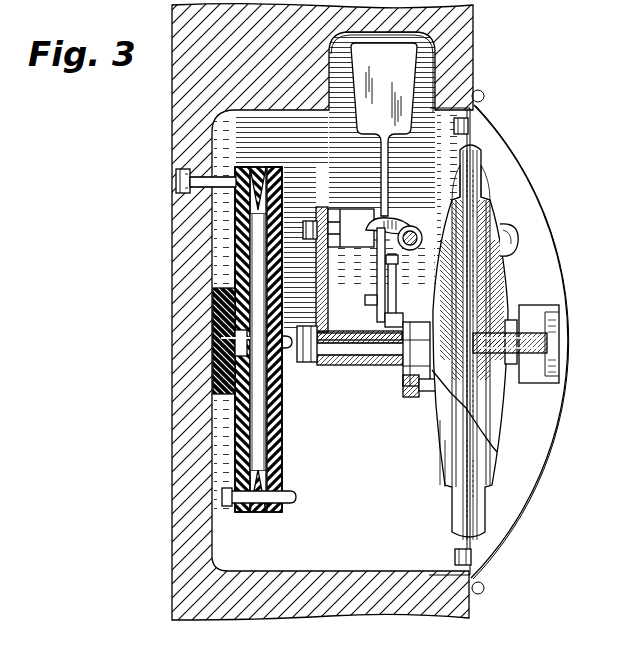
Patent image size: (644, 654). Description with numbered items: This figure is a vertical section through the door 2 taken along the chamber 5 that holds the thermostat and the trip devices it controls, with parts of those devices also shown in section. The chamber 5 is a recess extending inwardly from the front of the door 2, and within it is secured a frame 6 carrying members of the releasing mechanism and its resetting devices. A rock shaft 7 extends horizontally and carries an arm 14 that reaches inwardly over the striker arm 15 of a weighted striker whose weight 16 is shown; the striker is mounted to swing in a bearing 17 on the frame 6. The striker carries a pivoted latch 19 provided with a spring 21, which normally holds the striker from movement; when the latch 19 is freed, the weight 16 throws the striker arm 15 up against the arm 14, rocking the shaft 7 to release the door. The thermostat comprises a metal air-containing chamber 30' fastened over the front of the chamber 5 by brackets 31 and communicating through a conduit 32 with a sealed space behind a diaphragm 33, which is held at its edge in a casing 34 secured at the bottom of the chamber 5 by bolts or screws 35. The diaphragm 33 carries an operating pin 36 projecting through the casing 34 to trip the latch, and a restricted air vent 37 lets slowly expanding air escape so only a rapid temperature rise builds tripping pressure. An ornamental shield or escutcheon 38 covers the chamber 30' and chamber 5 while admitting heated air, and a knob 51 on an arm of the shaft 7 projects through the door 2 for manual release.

The door 2 is at (195, 83).
The chamber 5 is at (286, 322).
The frame 6 is at (316, 272).
The rock shaft 7 is at (412, 225).
The arm 14 is at (392, 216).
The striker arm 15 is at (377, 262).
The weight 16 is at (384, 129).
The bearing 17 is at (336, 213).
The latch 19 is at (400, 313).
The spring 21 is at (398, 262).
The air-containing chamber 30' is at (516, 342).
The brackets 31 is at (471, 112).
The conduit 32 is at (220, 343).
The diaphragm 33 is at (262, 422).
The casing 34 is at (283, 401).
The bolts or screws 35 is at (180, 183).
The operating pin 36 is at (287, 336).
The air vent 37 is at (506, 336).
The shield or escutcheon 38 is at (561, 428).
The handle or knob 51 is at (520, 236).